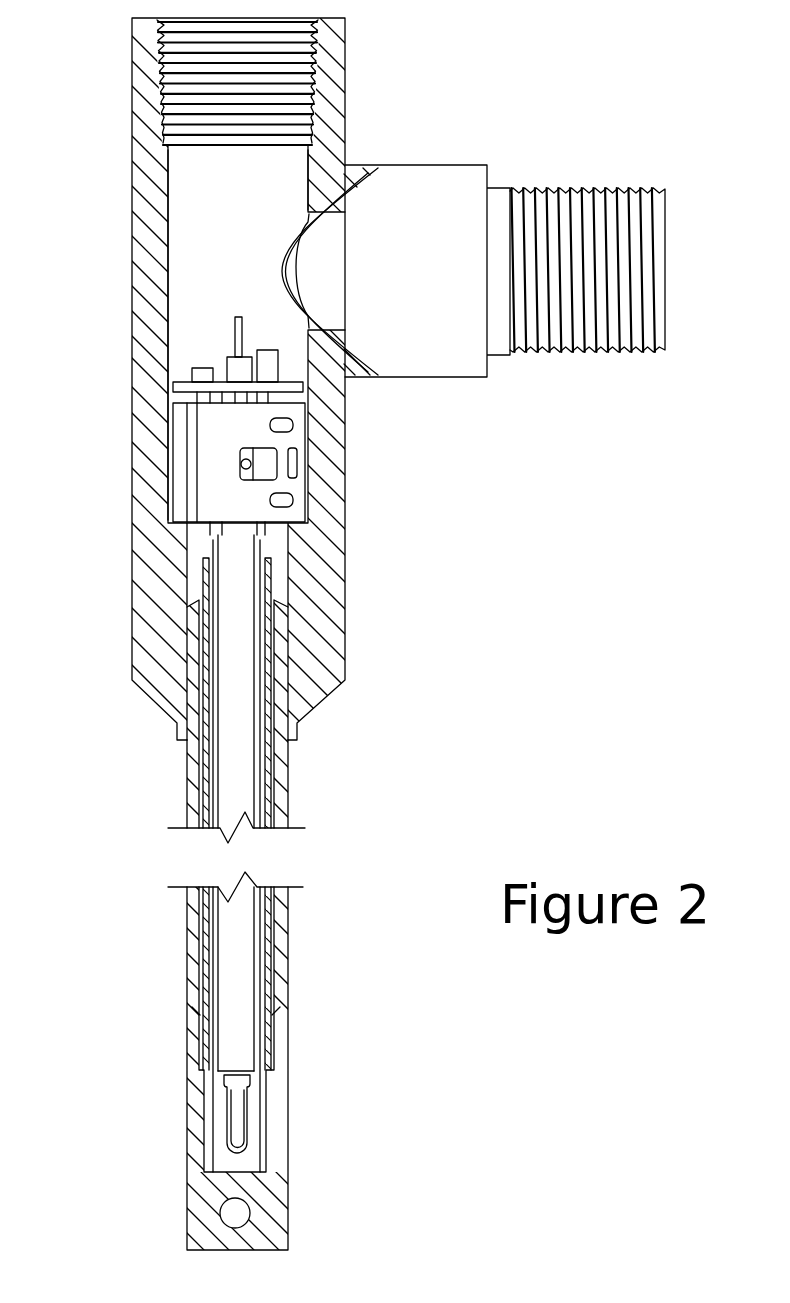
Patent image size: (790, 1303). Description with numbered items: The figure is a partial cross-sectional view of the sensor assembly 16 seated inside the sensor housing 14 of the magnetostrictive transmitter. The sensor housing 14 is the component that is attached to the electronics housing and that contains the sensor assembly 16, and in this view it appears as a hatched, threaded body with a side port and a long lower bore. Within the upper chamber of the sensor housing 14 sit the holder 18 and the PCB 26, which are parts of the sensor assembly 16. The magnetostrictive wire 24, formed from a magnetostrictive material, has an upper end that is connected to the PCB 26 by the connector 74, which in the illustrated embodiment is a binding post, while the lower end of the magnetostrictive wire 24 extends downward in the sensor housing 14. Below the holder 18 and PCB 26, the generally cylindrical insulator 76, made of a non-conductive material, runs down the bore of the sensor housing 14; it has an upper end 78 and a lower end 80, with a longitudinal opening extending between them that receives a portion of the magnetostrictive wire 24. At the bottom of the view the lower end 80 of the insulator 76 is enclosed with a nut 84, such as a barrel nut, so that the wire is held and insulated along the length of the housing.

The sensor housing 14 is at (398, 111).
The sensor assembly 16 is at (237, 263).
The holder 18 is at (171, 465).
The magnetostrictive wire 24 is at (231, 337).
The PCB 26 is at (309, 388).
The connector 74 is at (247, 354).
The insulator 76 is at (259, 782).
The upper end 78 is at (259, 532).
The lower end 80 is at (260, 1069).
The nut 84 is at (253, 1118).